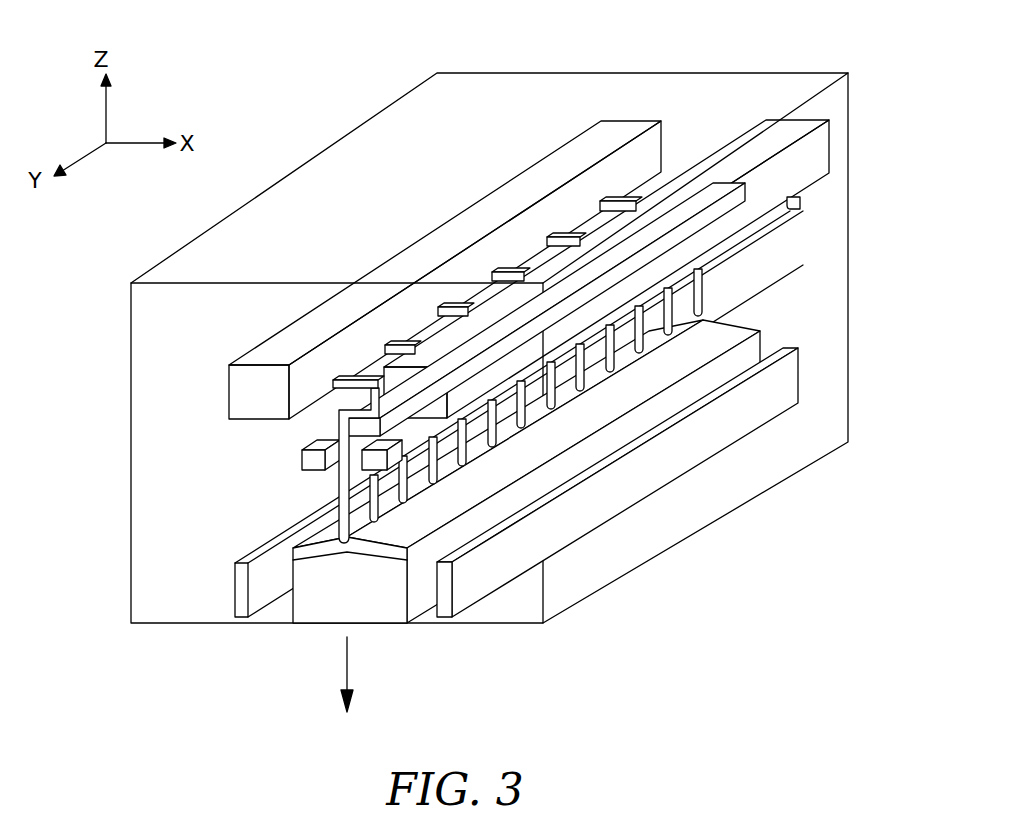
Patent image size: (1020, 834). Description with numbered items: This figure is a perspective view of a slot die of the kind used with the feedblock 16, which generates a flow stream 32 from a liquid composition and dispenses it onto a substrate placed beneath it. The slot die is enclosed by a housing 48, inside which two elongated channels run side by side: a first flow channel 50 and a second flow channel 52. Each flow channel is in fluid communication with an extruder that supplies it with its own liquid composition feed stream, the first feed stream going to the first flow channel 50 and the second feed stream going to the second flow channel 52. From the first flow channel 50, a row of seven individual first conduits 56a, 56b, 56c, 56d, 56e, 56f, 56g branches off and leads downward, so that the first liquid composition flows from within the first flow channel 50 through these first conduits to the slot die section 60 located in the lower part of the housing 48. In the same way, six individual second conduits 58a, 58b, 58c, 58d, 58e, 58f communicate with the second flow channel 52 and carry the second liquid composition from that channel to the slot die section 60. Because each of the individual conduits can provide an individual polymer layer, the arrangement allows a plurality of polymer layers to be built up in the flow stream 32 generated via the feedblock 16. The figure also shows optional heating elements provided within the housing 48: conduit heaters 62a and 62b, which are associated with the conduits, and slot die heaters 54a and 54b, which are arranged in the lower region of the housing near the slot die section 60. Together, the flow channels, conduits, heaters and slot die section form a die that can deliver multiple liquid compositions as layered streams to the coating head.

The feedblock 16 is at (322, 50).
The flow stream 32 is at (348, 667).
The housing 48 is at (737, 508).
The first flow channel 50 is at (820, 153).
The second flow channel 52 is at (618, 133).
The slot die heater 54a is at (240, 587).
The slot die heater 54b is at (446, 597).
The first conduit 56a is at (342, 432).
The first conduit 56b is at (407, 490).
The first conduit 56c is at (463, 445).
The first conduit 56d is at (524, 420).
The first conduit 56e is at (585, 385).
The first conduit 56f is at (645, 345).
The first conduit 56g is at (710, 300).
The second conduit 58a is at (333, 382).
The second conduit 58b is at (395, 345).
The second conduit 58c is at (450, 307).
The second conduit 58d is at (503, 272).
The second conduit 58e is at (557, 236).
The second conduit 58f is at (610, 200).
The slot die section 60 is at (316, 598).
The conduit heater 62a is at (303, 467).
The conduit heater 62b is at (783, 213).